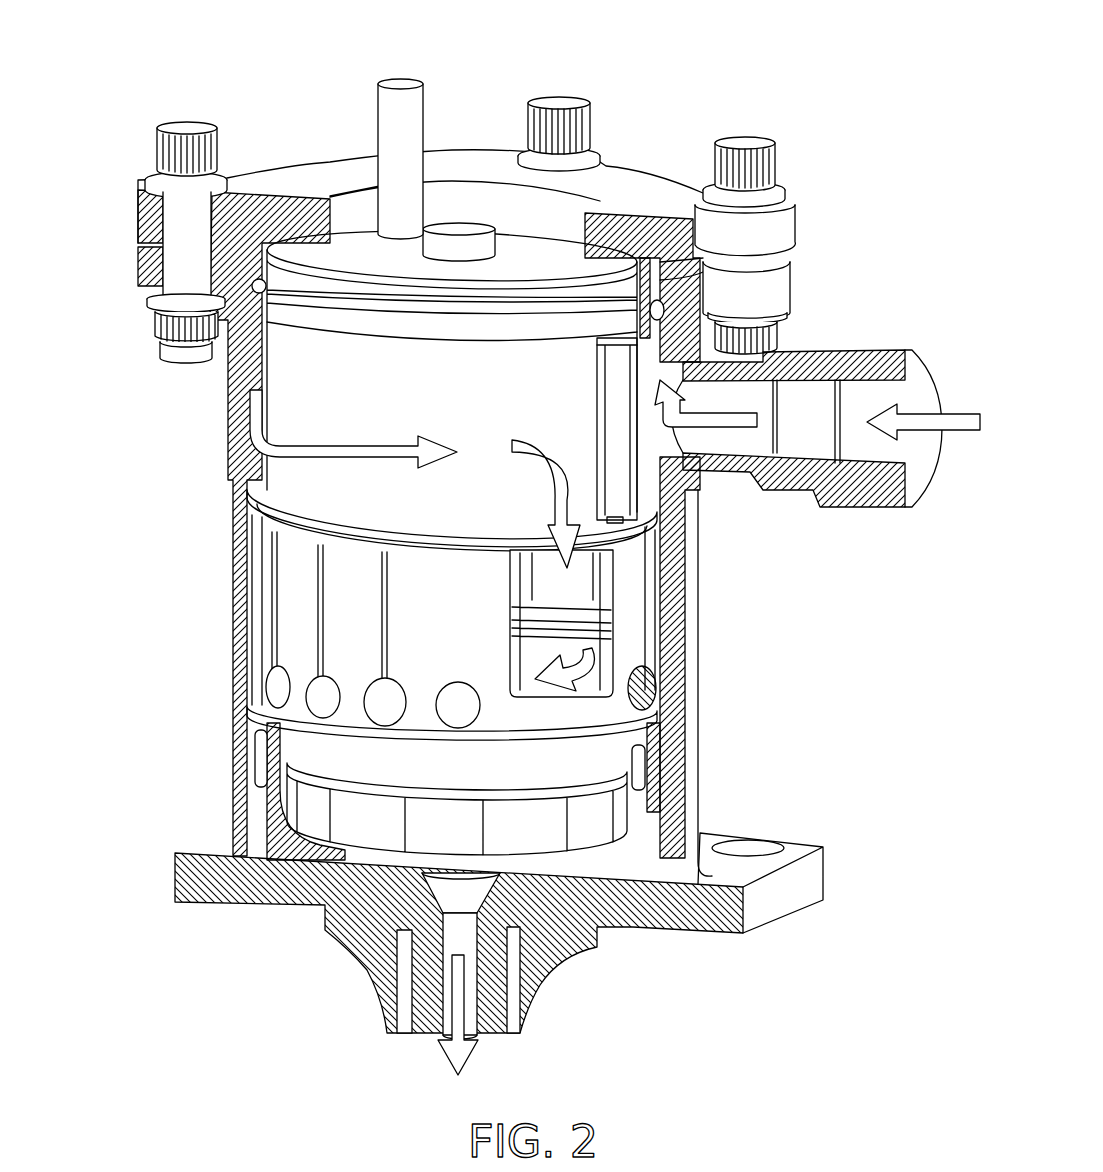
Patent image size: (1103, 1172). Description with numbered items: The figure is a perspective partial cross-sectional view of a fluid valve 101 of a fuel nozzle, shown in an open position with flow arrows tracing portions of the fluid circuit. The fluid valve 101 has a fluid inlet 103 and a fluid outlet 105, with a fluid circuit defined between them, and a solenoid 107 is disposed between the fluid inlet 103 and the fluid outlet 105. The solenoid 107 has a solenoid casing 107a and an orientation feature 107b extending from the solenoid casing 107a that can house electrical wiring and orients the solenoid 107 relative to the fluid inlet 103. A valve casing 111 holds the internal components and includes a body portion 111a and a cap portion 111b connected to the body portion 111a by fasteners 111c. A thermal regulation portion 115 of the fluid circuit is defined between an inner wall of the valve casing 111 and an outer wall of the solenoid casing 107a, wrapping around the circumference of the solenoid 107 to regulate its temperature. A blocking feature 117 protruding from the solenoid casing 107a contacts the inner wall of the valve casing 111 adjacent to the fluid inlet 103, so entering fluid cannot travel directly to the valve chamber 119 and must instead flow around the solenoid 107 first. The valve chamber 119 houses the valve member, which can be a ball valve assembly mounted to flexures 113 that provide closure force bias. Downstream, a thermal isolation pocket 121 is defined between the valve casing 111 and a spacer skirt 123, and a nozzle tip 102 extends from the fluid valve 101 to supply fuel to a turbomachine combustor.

The fluid valve 101 is at (126, 135).
The nozzle tip 102 is at (420, 1021).
The fluid inlet 103 is at (713, 477).
The fluid outlet 105 is at (528, 1020).
The solenoid 107 is at (298, 478).
The solenoid casing 107a is at (285, 346).
The orientation feature 107b is at (414, 108).
The valve casing 111 is at (235, 563).
The body portion 111a is at (782, 222).
The cap portion 111b is at (625, 176).
The fasteners 111c is at (765, 166).
The flexures 113 is at (583, 622).
The thermal regulation portion 115 is at (268, 455).
The blocking feature 117 is at (622, 452).
The valve chamber 119 is at (590, 668).
The thermal isolation pocket 121 is at (262, 752).
The spacer skirt 123 is at (284, 810).